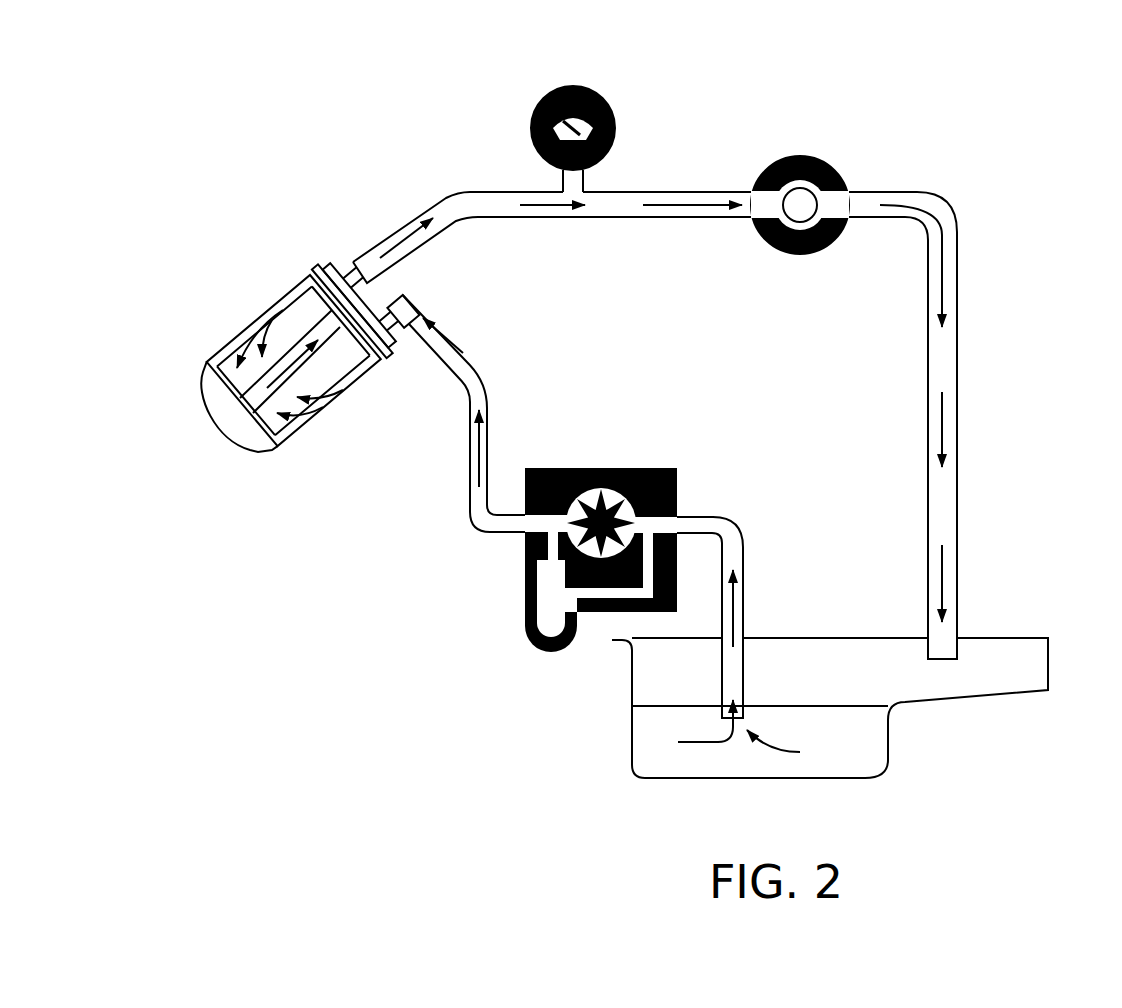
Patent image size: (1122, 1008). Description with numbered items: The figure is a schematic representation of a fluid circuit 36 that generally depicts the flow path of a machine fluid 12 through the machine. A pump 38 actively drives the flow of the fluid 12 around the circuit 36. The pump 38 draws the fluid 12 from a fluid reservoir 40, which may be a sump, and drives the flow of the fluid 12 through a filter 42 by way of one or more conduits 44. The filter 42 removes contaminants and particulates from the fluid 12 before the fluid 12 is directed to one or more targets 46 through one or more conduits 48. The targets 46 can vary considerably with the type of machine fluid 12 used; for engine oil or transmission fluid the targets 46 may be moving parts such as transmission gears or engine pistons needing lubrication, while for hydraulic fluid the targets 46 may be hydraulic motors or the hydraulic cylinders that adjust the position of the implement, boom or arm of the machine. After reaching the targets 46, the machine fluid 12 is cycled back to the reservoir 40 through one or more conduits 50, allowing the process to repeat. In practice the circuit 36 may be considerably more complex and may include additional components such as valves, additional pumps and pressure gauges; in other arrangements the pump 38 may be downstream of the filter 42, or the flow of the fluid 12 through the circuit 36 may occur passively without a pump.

The fluid circuit 36 is at (998, 77).
The filter 42 is at (220, 352).
The conduits 48 is at (658, 192).
The targets 46 is at (828, 162).
The conduits 50 is at (958, 438).
The conduits 44 is at (492, 420).
The pump 38 is at (600, 468).
The fluid reservoir 40 is at (632, 732).
The machine fluid 12 is at (475, 523).